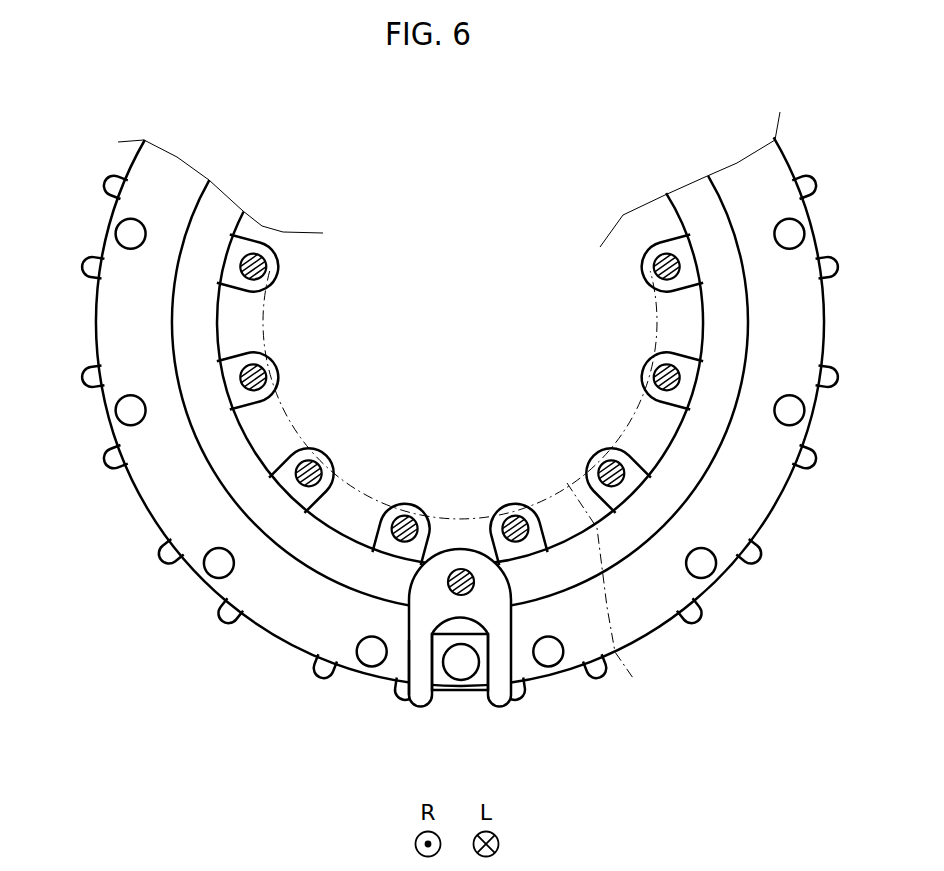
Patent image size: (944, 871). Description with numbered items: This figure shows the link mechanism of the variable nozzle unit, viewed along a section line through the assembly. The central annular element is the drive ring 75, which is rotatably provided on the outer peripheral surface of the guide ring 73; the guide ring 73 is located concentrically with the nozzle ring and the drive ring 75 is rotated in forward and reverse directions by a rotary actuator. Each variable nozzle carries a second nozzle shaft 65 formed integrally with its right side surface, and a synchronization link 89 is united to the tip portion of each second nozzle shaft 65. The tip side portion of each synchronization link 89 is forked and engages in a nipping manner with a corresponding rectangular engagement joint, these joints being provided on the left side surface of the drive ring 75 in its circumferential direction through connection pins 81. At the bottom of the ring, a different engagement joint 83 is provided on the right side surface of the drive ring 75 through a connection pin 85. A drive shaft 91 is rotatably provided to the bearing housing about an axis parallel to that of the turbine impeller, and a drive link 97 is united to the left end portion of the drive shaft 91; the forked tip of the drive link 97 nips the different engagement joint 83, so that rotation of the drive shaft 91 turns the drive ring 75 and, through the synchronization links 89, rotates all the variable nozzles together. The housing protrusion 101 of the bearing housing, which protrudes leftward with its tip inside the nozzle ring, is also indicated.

The second nozzle shaft 65 is at (259, 267).
The guide ring 73 is at (243, 446).
The drive ring 75 is at (280, 612).
The connection pin 81 is at (127, 233).
The different engagement joint 83 is at (448, 690).
The connection pin 85 is at (463, 673).
The synchronization link 89 is at (265, 251).
The drive shaft 91 is at (459, 571).
The drive link 97 is at (410, 662).
The housing protrusion 101 is at (615, 596).